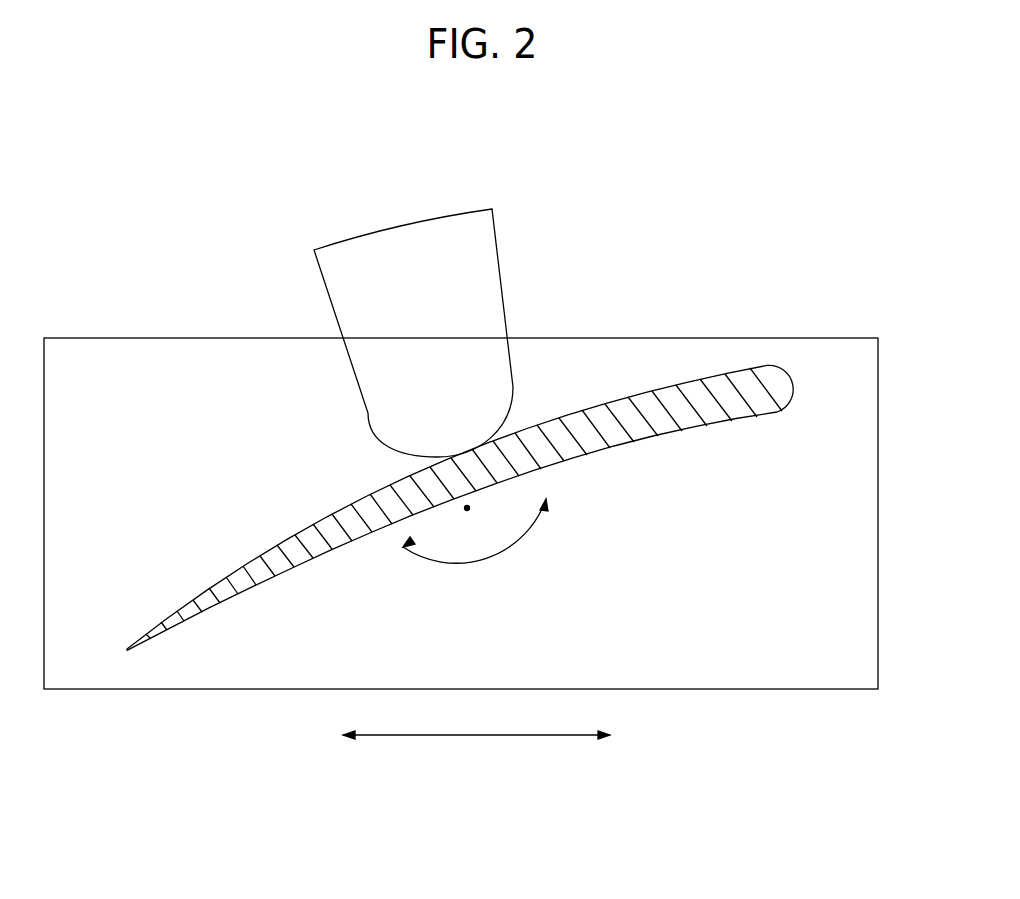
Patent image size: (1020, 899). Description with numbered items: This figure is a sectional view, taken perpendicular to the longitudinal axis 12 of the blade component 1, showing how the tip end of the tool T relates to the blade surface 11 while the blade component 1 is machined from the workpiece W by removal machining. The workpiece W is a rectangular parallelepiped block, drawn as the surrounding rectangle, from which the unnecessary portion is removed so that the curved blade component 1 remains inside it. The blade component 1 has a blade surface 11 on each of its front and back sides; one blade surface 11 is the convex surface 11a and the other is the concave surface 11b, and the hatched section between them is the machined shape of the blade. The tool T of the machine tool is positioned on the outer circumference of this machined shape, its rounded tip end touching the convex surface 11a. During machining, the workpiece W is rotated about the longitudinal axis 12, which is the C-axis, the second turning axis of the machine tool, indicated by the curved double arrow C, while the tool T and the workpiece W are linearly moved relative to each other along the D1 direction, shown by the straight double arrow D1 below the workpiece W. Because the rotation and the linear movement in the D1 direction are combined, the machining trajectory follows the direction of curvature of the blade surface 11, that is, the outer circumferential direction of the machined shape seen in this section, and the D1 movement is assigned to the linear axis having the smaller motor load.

The blade component 1 is at (504, 465).
The blade surface 11 is at (460, 466).
The convex surface 11a is at (648, 390).
The concave surface 11b is at (703, 427).
The longitudinal axis 12 is at (470, 505).
The tool T is at (500, 272).
The workpiece W is at (752, 338).
The C-axis C is at (475, 545).
The D1 direction D1 is at (476, 749).